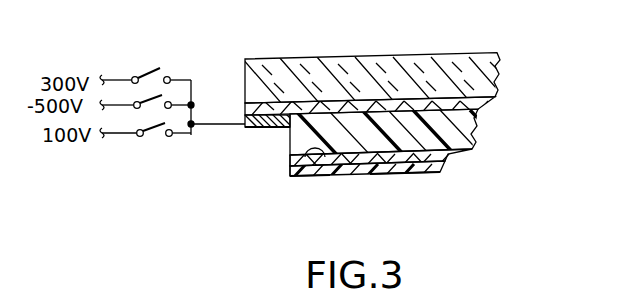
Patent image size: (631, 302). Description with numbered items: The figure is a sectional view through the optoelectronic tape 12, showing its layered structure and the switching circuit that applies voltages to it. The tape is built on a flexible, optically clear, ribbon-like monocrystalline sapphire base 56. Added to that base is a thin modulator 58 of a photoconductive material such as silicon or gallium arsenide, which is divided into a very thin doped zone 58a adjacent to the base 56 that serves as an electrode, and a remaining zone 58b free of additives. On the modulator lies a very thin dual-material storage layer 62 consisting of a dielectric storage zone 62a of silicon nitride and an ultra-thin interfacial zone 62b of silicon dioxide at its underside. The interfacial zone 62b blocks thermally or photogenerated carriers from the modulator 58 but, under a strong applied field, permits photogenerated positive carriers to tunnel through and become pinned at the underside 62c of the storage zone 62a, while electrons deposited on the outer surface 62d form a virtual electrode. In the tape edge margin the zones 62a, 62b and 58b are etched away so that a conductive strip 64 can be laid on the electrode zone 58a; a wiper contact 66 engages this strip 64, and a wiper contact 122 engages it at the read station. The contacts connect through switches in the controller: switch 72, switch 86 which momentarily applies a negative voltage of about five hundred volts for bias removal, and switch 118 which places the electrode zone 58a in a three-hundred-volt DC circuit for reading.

The optoelectronic tape 12 is at (231, 66).
The base 56 is at (500, 72).
The modulator 58 is at (426, 134).
The doped zone 58a is at (478, 105).
The remaining zone 58b is at (470, 131).
The dual-material storage layer 62 is at (429, 193).
The storage zone 62a is at (440, 172).
The interfacial zone 62b is at (447, 158).
The underside of storage zone 62c is at (298, 178).
The surface of layer 62d is at (401, 178).
The conductive strip 64 is at (272, 128).
The wiper contact 66 is at (247, 128).
The wiper contact 122 is at (220, 155).
The switch 72 is at (150, 137).
The switch 86 is at (148, 107).
The switch 118 is at (149, 76).